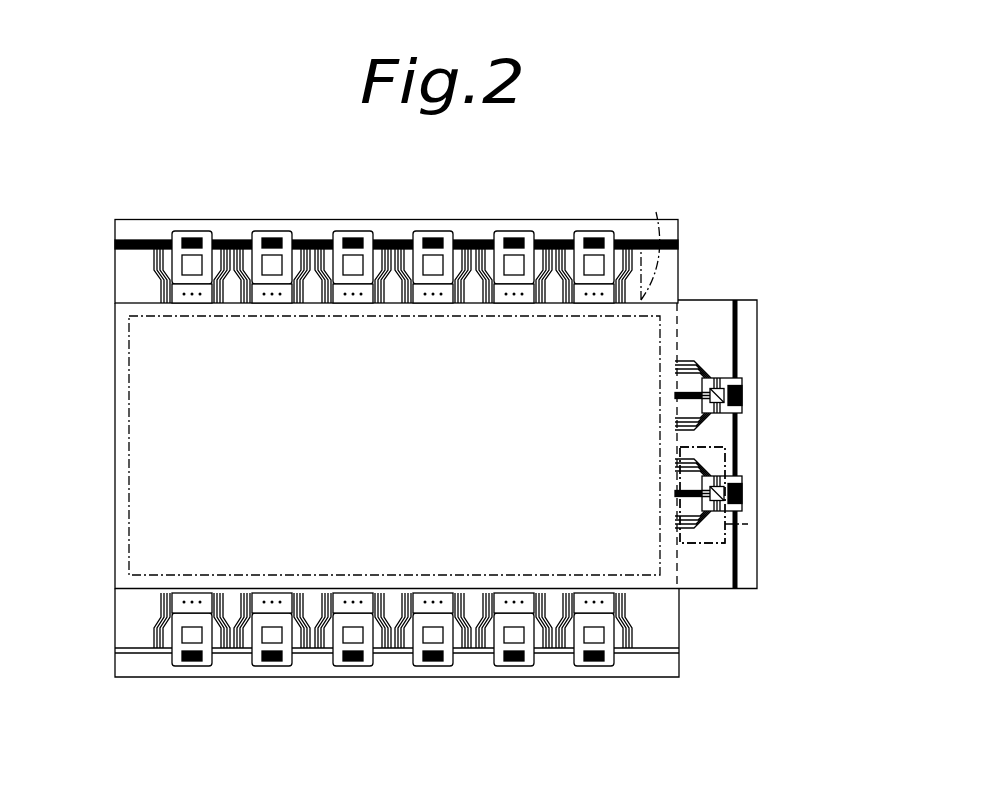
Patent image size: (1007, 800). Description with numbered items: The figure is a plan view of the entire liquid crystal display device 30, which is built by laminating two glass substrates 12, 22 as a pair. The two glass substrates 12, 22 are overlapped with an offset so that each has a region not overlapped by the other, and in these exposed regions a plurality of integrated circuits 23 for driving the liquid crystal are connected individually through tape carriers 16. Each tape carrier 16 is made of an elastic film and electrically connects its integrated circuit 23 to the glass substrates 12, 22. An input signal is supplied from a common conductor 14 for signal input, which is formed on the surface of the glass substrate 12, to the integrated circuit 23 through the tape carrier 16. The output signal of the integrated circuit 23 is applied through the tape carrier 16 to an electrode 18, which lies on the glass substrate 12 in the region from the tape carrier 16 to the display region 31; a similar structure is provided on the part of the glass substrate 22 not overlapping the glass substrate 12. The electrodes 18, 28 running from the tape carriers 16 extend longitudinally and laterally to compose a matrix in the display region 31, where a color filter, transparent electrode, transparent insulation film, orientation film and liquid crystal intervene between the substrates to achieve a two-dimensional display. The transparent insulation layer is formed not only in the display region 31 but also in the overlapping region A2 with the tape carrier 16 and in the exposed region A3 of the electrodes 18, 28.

The glass substrate 12 is at (667, 262).
The common conductor for signal input 14 is at (150, 226).
The tape carrier 16 is at (577, 236).
The electrode 18 is at (164, 291).
The glass substrate 22 is at (713, 332).
The integrated circuit 23 is at (590, 272).
The electrode 28 is at (690, 544).
The liquid crystal display device 30 is at (758, 167).
The display region 31 is at (640, 332).
The overlapping region with the tape carrier A2 is at (598, 237).
The exposed region of the electrodes A3 is at (777, 521).